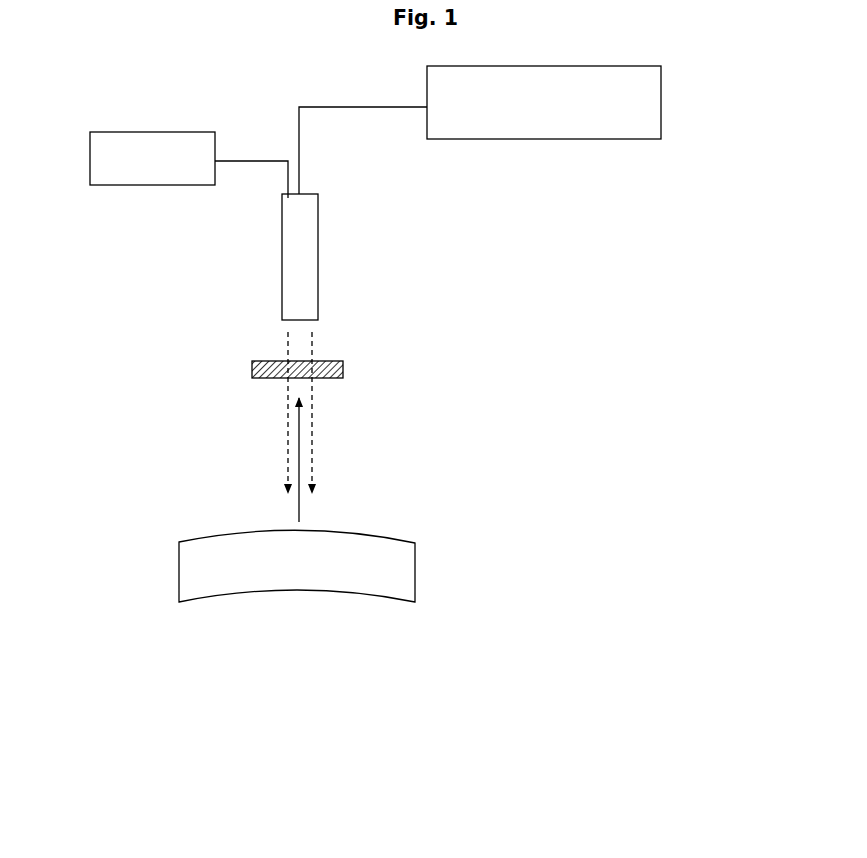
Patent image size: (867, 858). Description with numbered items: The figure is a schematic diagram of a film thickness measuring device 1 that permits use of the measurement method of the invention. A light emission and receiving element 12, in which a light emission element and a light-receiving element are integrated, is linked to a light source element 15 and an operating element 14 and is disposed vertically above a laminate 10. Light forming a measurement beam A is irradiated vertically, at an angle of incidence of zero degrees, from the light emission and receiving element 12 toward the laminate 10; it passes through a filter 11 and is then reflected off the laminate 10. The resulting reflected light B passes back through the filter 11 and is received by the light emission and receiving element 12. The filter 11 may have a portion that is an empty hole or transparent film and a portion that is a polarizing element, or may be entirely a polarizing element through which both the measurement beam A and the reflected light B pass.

The film thickness measuring device 1 is at (306, 673).
The laminate 10 is at (395, 575).
The filter 11 is at (343, 369).
The light emission and receiving element 12 is at (308, 273).
The operating element 14 is at (702, 143).
The light source element 15 is at (143, 162).
The measurement beam A is at (367, 711).
The reflected light B is at (367, 747).